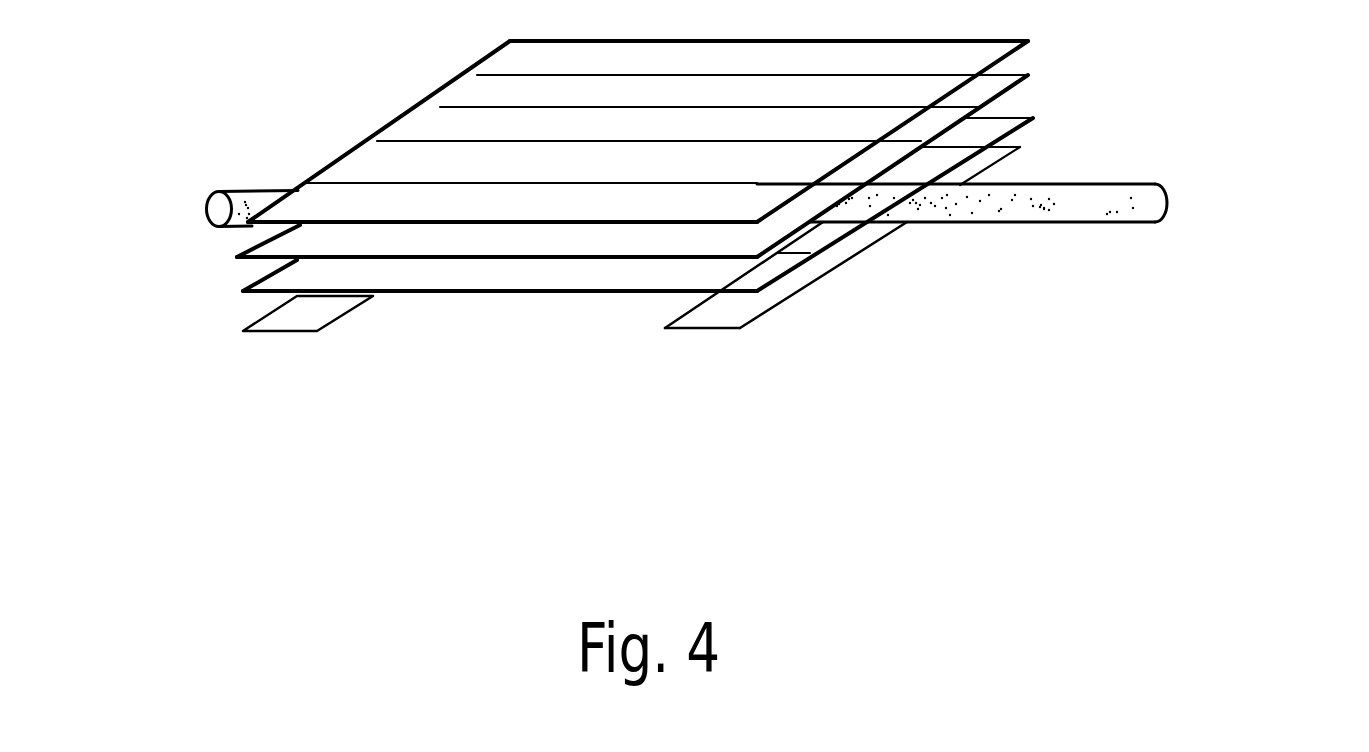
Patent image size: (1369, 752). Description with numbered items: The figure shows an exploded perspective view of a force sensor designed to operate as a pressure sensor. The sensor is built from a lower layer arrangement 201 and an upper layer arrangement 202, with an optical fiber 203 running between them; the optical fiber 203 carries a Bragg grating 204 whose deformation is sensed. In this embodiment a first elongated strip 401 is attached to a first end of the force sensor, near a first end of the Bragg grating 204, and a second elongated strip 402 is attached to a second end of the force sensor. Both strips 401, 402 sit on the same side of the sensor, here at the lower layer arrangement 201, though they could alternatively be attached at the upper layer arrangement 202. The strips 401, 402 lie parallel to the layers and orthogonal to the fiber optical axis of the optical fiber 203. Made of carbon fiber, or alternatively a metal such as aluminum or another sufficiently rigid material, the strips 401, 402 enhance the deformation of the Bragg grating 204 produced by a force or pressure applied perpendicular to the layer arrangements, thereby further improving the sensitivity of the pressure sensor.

The lower layer arrangement 201 is at (222, 298).
The upper layer arrangement 202 is at (1040, 17).
The optical fiber 203 is at (1192, 203).
The Bragg grating 204 is at (566, 340).
The first elongated strip 401 is at (282, 358).
The second elongated strip 402 is at (784, 326).